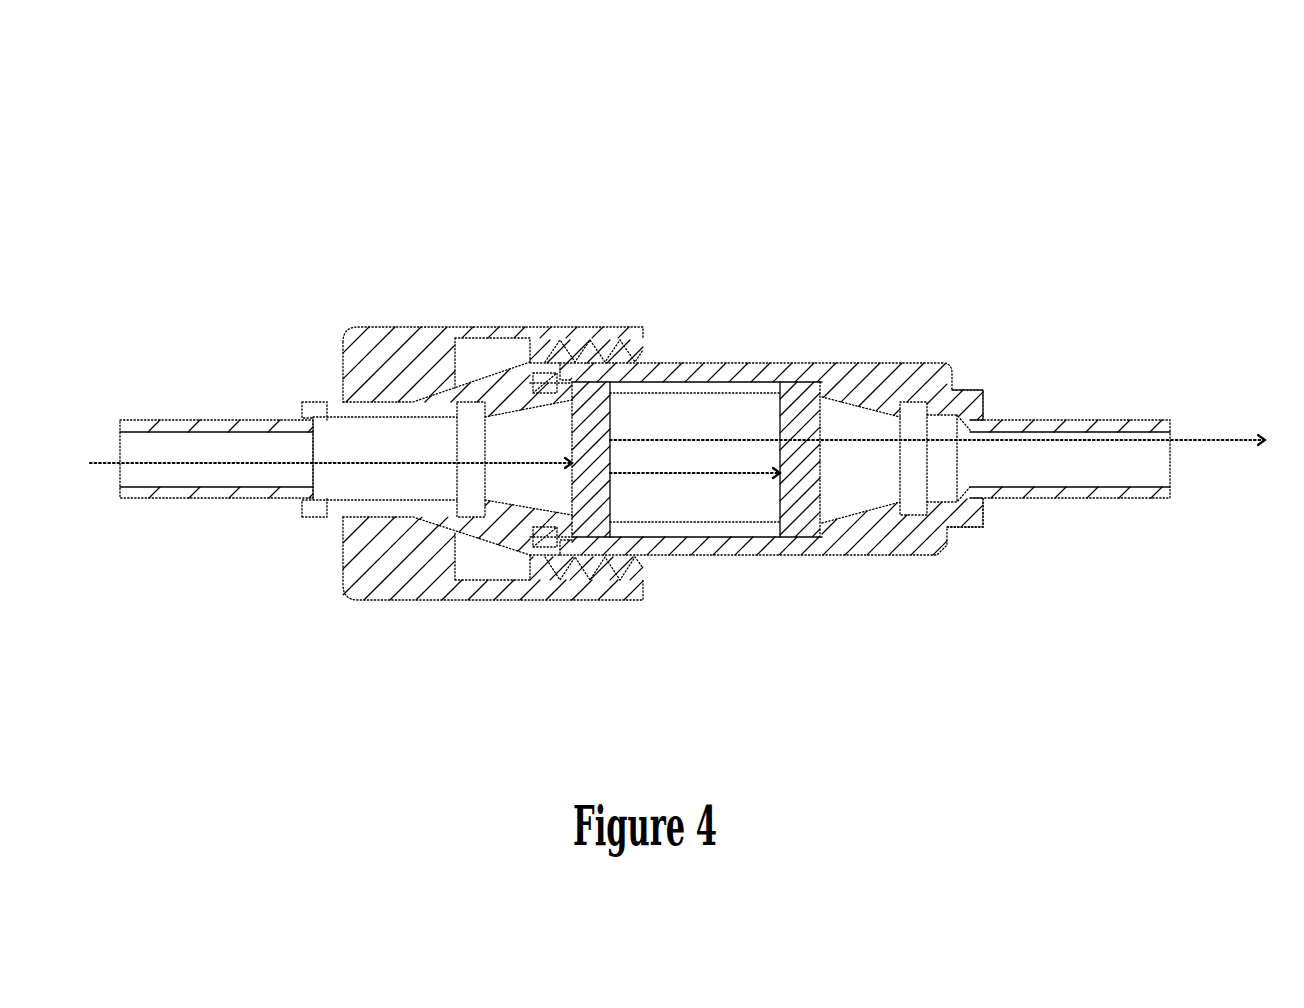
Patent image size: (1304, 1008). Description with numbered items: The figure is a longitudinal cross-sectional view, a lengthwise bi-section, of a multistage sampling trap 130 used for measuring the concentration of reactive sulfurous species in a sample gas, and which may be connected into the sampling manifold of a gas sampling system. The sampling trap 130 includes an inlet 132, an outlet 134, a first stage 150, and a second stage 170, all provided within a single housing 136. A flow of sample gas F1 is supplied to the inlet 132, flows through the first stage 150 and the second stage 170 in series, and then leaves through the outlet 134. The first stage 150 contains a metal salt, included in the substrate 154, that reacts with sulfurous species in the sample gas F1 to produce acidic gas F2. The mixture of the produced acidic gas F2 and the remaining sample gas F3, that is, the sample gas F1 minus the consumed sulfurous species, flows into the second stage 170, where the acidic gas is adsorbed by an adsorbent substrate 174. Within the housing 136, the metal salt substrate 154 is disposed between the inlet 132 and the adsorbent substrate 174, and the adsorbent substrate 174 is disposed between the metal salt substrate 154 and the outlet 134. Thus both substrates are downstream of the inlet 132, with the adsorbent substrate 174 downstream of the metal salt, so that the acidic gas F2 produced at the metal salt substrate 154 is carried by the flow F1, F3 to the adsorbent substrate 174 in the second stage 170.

The sampling trap 130 is at (218, 167).
The inlet 132 is at (120, 452).
The outlet 134 is at (1170, 468).
The housing 136 is at (943, 550).
The first stage 150 is at (128, 315).
The substrate 154 is at (610, 487).
The second stage 170 is at (627, 317).
The adsorbent substrate 174 is at (820, 487).
The flow of sample gas F1 is at (110, 465).
The acidic gas F2 is at (717, 473).
The sample gas F3 is at (738, 440).